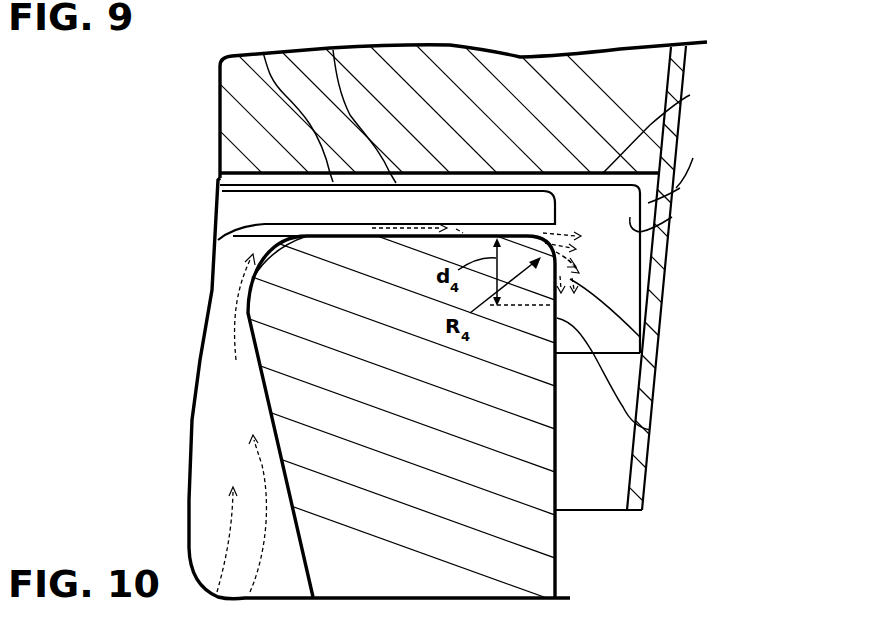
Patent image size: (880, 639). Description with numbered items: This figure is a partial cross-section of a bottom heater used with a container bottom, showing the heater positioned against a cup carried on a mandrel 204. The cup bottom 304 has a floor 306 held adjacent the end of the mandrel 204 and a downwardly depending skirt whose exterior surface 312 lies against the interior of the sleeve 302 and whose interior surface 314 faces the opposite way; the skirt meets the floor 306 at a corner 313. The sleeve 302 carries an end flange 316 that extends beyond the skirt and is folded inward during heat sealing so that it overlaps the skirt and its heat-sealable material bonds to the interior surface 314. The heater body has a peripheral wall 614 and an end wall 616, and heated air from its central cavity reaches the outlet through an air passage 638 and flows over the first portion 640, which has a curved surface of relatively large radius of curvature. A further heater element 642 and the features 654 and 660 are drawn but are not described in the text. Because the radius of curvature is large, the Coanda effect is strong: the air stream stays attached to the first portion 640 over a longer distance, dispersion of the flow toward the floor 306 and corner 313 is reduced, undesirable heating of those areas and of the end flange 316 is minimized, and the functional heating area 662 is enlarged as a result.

The mandrel 204 is at (504, 101).
The sleeve 302 is at (688, 70).
The cup bottom 304 is at (455, 166).
The floor 306 is at (547, 186).
The exterior surface 312 is at (672, 217).
The corner 313 is at (693, 158).
The interior surface 314 is at (680, 188).
The end flange 316 is at (650, 412).
The peripheral wall 614 is at (555, 551).
The end wall 616 is at (263, 52).
The air passage 638 is at (333, 50).
The first portion 640 is at (650, 429).
The curved surface 642 is at (690, 95).
The flow stream 654 is at (252, 280).
The cooling flow 660 is at (638, 336).
The functional heating area 662 is at (681, 220).